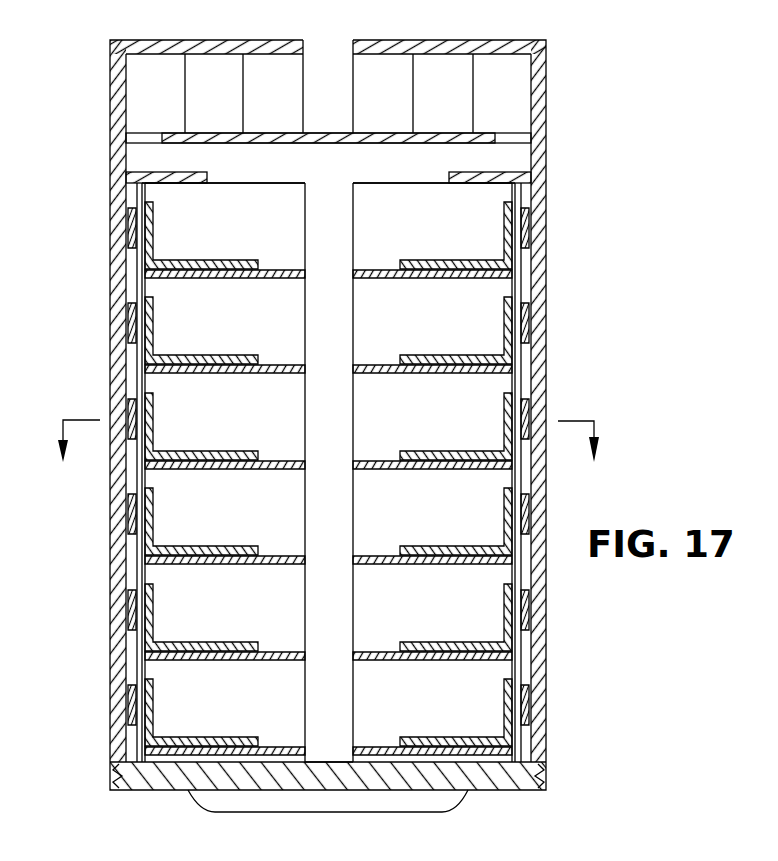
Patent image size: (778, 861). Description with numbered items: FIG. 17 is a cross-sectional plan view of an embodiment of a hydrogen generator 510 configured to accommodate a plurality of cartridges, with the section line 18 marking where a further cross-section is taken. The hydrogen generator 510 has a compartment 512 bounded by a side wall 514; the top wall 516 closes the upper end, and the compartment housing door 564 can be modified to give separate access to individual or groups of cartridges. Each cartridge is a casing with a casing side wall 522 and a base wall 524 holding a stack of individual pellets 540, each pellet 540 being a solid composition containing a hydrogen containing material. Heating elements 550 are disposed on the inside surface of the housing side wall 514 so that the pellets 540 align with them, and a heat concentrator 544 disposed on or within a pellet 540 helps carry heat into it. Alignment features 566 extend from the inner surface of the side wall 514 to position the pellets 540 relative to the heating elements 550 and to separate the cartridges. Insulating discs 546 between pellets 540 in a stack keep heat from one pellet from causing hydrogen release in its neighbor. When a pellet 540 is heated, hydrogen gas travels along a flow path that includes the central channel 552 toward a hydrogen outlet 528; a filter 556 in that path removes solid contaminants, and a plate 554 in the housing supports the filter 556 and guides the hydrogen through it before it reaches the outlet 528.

The hydrogen generator 510 is at (577, 93).
The compartment 512 is at (565, 173).
The side wall 514 is at (540, 223).
The top wall 516 is at (450, 40).
The casing side wall 522 is at (140, 287).
The base wall 524 is at (183, 762).
The hydrogen outlet 528 is at (332, 70).
The pellet 540 is at (197, 397).
The heat concentrator 544 is at (437, 352).
The insulating disc 546 is at (243, 558).
The heating element 550 is at (532, 612).
The central channel 552 is at (327, 604).
The plate 554 is at (183, 132).
The filter 556 is at (275, 78).
The compartment housing door 564 is at (478, 775).
The alignment feature 566 is at (180, 175).
The section line 18- 18 is at (330, 456).